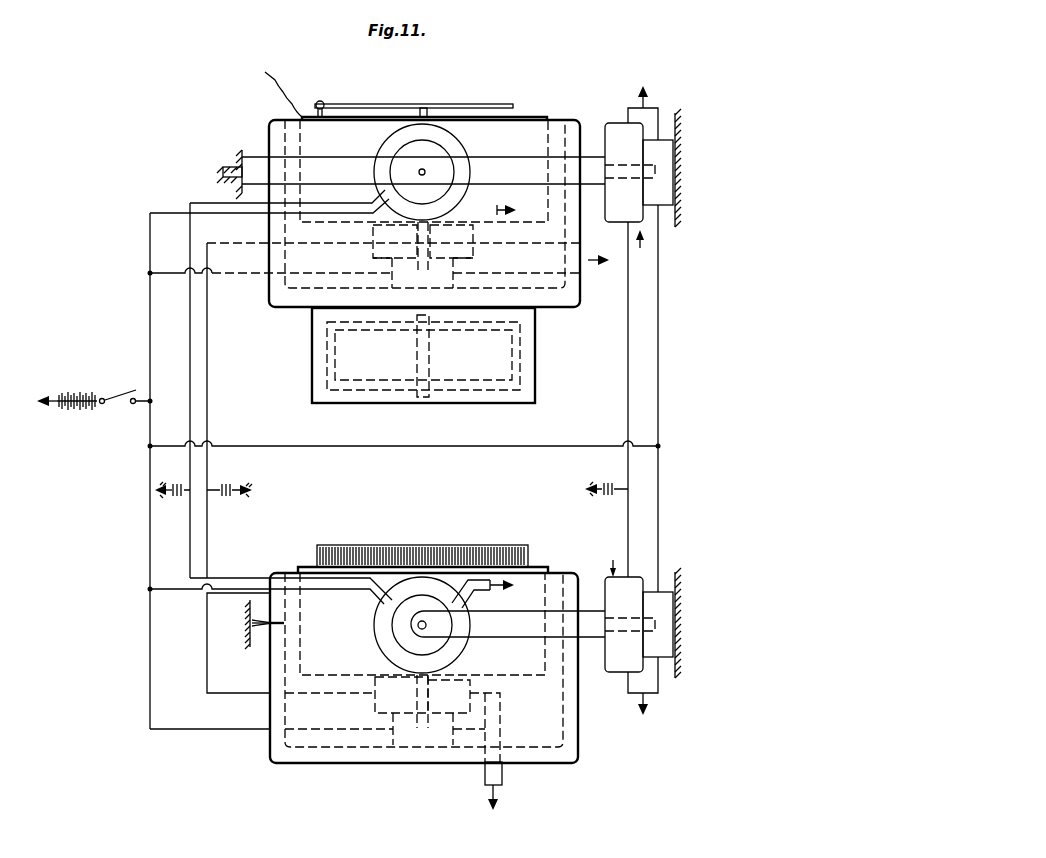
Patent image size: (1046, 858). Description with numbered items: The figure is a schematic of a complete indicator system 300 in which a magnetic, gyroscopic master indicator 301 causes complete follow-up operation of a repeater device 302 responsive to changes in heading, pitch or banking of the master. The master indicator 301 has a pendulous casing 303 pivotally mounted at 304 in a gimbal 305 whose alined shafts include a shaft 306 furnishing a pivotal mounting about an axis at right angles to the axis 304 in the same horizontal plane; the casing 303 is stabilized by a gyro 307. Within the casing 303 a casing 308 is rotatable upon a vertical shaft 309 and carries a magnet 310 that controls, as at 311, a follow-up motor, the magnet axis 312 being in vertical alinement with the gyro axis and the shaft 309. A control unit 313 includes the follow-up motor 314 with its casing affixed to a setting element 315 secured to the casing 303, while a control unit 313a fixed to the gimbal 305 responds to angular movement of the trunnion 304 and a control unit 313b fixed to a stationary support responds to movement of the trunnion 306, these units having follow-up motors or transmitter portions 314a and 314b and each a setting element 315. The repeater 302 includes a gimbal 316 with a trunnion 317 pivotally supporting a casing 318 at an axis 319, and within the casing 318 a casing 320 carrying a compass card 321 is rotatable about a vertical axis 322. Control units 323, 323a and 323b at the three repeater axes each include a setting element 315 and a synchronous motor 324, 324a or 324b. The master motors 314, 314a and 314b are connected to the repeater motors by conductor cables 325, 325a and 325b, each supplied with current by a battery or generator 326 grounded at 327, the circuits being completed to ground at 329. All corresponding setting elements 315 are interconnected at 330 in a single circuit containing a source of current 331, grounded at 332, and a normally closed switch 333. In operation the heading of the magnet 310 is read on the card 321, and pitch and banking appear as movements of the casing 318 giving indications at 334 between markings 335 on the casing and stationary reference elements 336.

The indicator system 300 is at (108, 228).
The master indicator 301 is at (258, 124).
The repeater device 302 is at (480, 512).
The casing 303 is at (272, 296).
The pivotal mounting 304 is at (448, 160).
The gimbal 305 is at (598, 145).
The shaft 306 is at (635, 160).
The gyro 307 is at (312, 376).
The rotatable casing 308 is at (269, 88).
The vertical shaft 309 is at (417, 248).
The magnet 310 is at (404, 104).
The follow-up control point 311 is at (322, 92).
The magnet axis 312 is at (445, 108).
The control unit 313 is at (372, 258).
The control unit 313a is at (366, 143).
The control unit 313b is at (648, 311).
The follow-up motor 314 is at (474, 238).
The follow-up motor 314a is at (388, 198).
The follow-up motor 314b is at (610, 123).
The setting element 315 is at (430, 165).
The gimbal 316 is at (508, 624).
The trunnion 317 is at (634, 633).
The casing 318 is at (270, 756).
The axis 319 is at (418, 626).
The casing 320 is at (306, 565).
The compass card 321 is at (350, 545).
The vertical axis 322 is at (430, 704).
The control unit 323 is at (372, 709).
The control unit 323a is at (364, 608).
The control unit 323b is at (607, 555).
The synchronous motor 324 is at (474, 690).
The synchronous motor 324a is at (380, 650).
The synchronous motor 324b is at (618, 690).
The conductor cable 325 is at (210, 357).
The conductor cable 325a is at (188, 376).
The supply branch line 325b is at (626, 398).
The battery or generator 326 is at (175, 480).
The ground 327 is at (256, 484).
The ground 329 is at (650, 84).
The single circuit interconnection 330 is at (172, 276).
The resistor 331 is at (78, 414).
The ground 332 is at (46, 388).
The switch 333 is at (126, 412).
The indications 334 is at (246, 660).
The markings 335 is at (264, 612).
The reference elements 336 is at (248, 632).